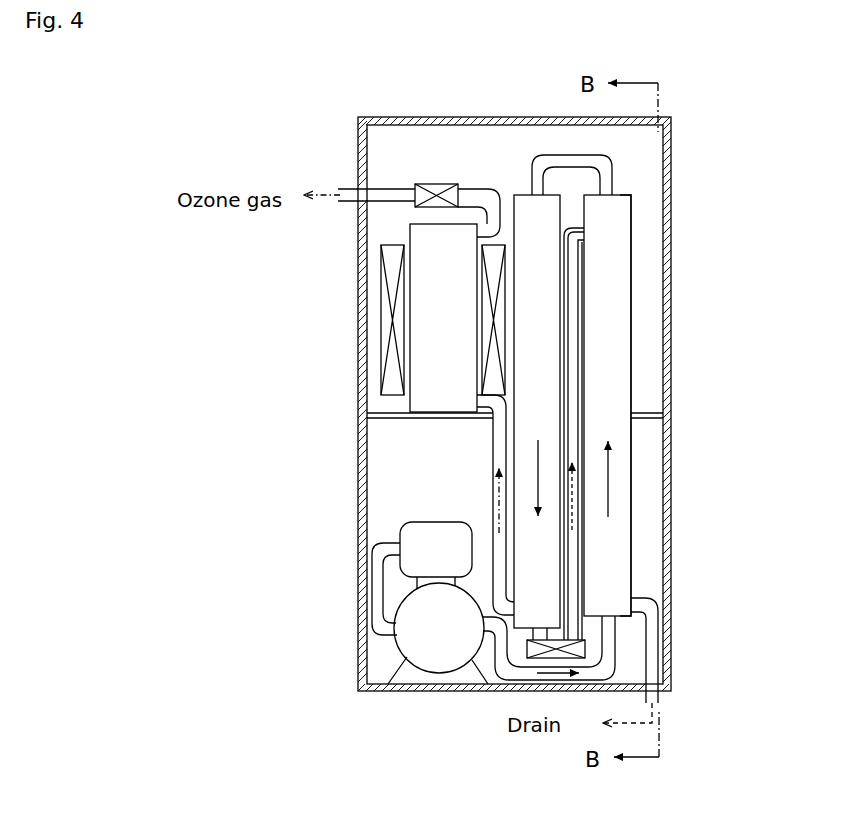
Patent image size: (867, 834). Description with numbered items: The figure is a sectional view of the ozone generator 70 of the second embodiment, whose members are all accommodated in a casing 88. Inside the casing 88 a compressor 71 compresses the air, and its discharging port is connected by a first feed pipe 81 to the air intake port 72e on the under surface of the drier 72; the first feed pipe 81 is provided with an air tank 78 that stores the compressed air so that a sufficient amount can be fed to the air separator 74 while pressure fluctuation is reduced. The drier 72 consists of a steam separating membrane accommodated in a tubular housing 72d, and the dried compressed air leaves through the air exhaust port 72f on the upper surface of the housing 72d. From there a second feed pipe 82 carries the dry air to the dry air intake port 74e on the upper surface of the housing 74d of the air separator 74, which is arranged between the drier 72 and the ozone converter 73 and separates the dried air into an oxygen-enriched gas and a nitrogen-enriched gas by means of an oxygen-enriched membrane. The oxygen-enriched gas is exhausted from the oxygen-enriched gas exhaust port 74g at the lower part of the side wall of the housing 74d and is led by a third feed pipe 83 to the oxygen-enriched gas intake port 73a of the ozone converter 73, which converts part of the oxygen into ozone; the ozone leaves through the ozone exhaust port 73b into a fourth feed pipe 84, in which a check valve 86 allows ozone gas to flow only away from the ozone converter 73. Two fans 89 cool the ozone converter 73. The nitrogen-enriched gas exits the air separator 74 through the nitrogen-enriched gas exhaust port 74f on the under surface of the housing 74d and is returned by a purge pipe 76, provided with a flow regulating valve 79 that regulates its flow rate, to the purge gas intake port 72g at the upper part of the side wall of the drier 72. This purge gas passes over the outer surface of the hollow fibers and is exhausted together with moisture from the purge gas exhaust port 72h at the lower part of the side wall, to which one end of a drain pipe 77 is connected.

The ozone generator 70 is at (224, 125).
The compressor 71 is at (398, 524).
The drier 72 is at (621, 326).
The housing 72d is at (630, 233).
The air intake port 72e is at (617, 617).
The air exhaust port 72f is at (612, 192).
The purge gas intake port 72g is at (580, 227).
The purge gas exhaust port 72h is at (632, 602).
The ozone converter 73 is at (458, 326).
The oxygen-enriched gas intake port 73a is at (483, 418).
The ozone exhaust port 73b is at (487, 212).
The air separator 74 is at (553, 326).
The housing 74d is at (562, 278).
The dry air intake port 74e is at (530, 195).
The nitrogen-enriched gas exhaust port 74f is at (533, 630).
The oxygen-enriched gas exhaust port 74g is at (512, 603).
The purge pipe 76 is at (580, 370).
The drain pipe 77 is at (660, 633).
The air tank 78 is at (398, 648).
The flow regulating valve 79 is at (527, 650).
The first feed pipe 81 is at (372, 582).
The second feed pipe 82 is at (615, 170).
The third feed pipe 83 is at (492, 447).
The fourth feed pipe 84 is at (390, 189).
The check valve 86 is at (427, 184).
The casing 88 is at (673, 143).
The fan 89 is at (381, 313).